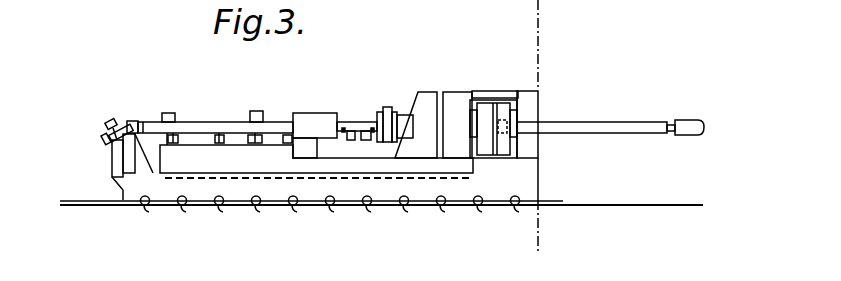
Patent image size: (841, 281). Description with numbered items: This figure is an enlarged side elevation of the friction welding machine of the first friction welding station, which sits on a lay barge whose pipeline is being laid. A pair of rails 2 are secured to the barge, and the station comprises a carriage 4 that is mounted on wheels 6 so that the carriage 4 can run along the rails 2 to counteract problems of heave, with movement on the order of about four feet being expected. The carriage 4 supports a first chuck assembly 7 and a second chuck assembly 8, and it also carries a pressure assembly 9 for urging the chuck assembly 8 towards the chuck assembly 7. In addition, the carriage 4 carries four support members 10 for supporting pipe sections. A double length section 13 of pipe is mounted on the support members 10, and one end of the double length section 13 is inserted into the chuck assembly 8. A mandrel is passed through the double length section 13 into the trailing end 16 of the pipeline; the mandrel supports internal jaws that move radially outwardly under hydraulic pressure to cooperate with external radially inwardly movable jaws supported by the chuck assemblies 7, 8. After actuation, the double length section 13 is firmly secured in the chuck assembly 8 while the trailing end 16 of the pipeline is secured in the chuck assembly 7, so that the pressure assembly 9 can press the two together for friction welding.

The rails 2 is at (77, 200).
The carriage 4 is at (460, 193).
The wheels 6 is at (182, 205).
The first chuck assembly 7 is at (515, 87).
The second chuck assembly 8 is at (464, 89).
The pressure assembly 9 is at (425, 89).
The support members 10 is at (178, 135).
The double length section 13 is at (227, 122).
The trailing end 16 is at (617, 122).